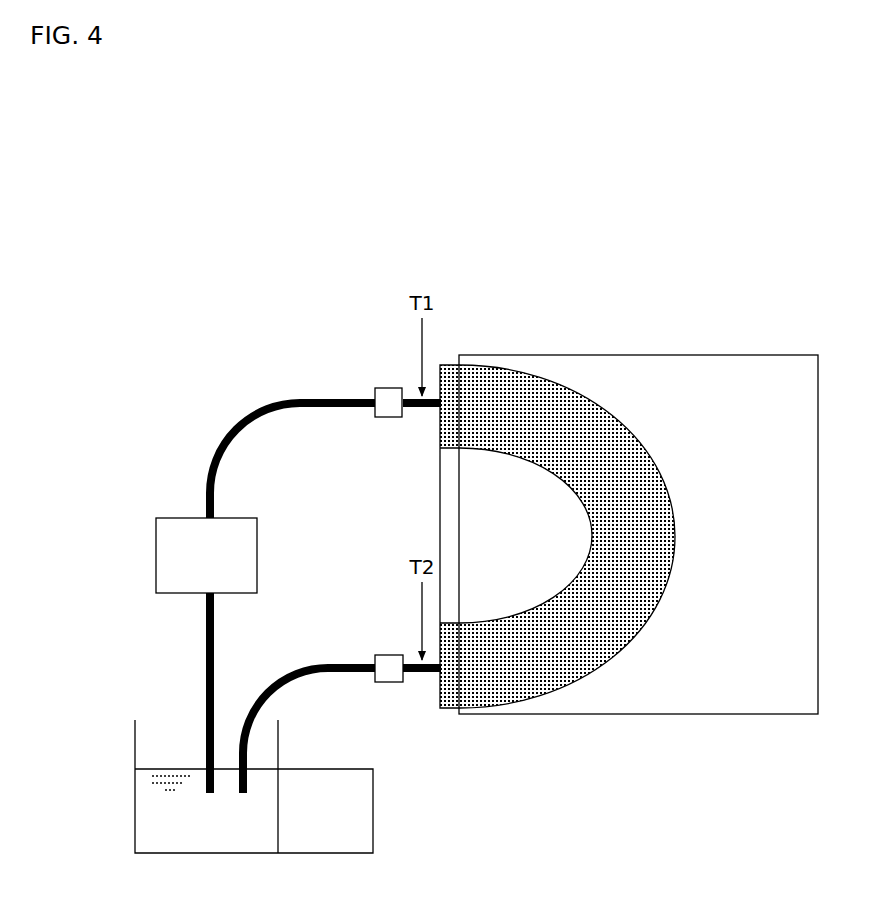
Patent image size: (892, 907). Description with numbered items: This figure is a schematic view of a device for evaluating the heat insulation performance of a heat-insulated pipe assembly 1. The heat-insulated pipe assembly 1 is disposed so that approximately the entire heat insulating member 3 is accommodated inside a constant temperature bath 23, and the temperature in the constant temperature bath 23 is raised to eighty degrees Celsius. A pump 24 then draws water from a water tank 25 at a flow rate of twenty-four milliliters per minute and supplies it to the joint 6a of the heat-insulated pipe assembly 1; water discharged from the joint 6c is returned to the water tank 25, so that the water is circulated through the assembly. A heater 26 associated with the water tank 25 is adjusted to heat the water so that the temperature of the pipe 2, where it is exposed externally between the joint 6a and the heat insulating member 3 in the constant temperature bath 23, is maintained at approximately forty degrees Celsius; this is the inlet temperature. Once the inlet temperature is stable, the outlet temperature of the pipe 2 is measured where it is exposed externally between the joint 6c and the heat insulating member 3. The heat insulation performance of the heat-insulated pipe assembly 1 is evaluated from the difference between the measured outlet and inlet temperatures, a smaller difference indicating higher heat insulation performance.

The heat-insulated pipe assembly 1 is at (608, 536).
The pipe 2 is at (421, 412).
The heat insulating member 3 is at (670, 478).
The joint 6a is at (390, 388).
The joint 6c is at (390, 655).
The constant temperature bath 23 is at (650, 714).
The pump 24 is at (176, 518).
The water tank 25 is at (133, 744).
The heater 26 is at (320, 769).